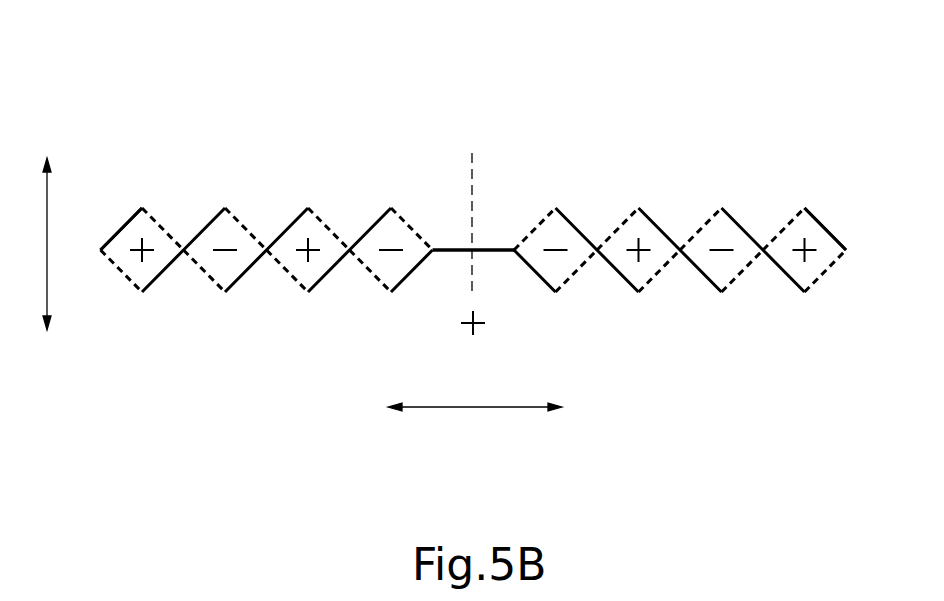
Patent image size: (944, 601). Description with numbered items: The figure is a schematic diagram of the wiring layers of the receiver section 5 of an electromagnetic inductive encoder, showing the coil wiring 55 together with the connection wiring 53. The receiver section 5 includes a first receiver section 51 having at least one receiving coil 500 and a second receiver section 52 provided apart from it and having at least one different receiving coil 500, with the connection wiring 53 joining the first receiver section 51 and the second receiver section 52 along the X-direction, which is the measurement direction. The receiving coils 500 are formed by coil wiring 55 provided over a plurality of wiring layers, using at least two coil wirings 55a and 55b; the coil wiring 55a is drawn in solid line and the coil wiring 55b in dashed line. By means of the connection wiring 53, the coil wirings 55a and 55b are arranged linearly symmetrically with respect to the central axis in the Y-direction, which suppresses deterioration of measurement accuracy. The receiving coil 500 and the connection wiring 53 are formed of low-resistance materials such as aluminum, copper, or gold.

The receiver section 5 is at (795, 98).
The first receiver section 51 is at (432, 295).
The second receiver section 52 is at (847, 290).
The connection wiring 53 is at (488, 246).
The coil wiring 55 is at (465, 257).
The coil wiring 55a is at (128, 212).
The coil wiring 55b is at (448, 246).
The receiving coil 500 is at (252, 212).